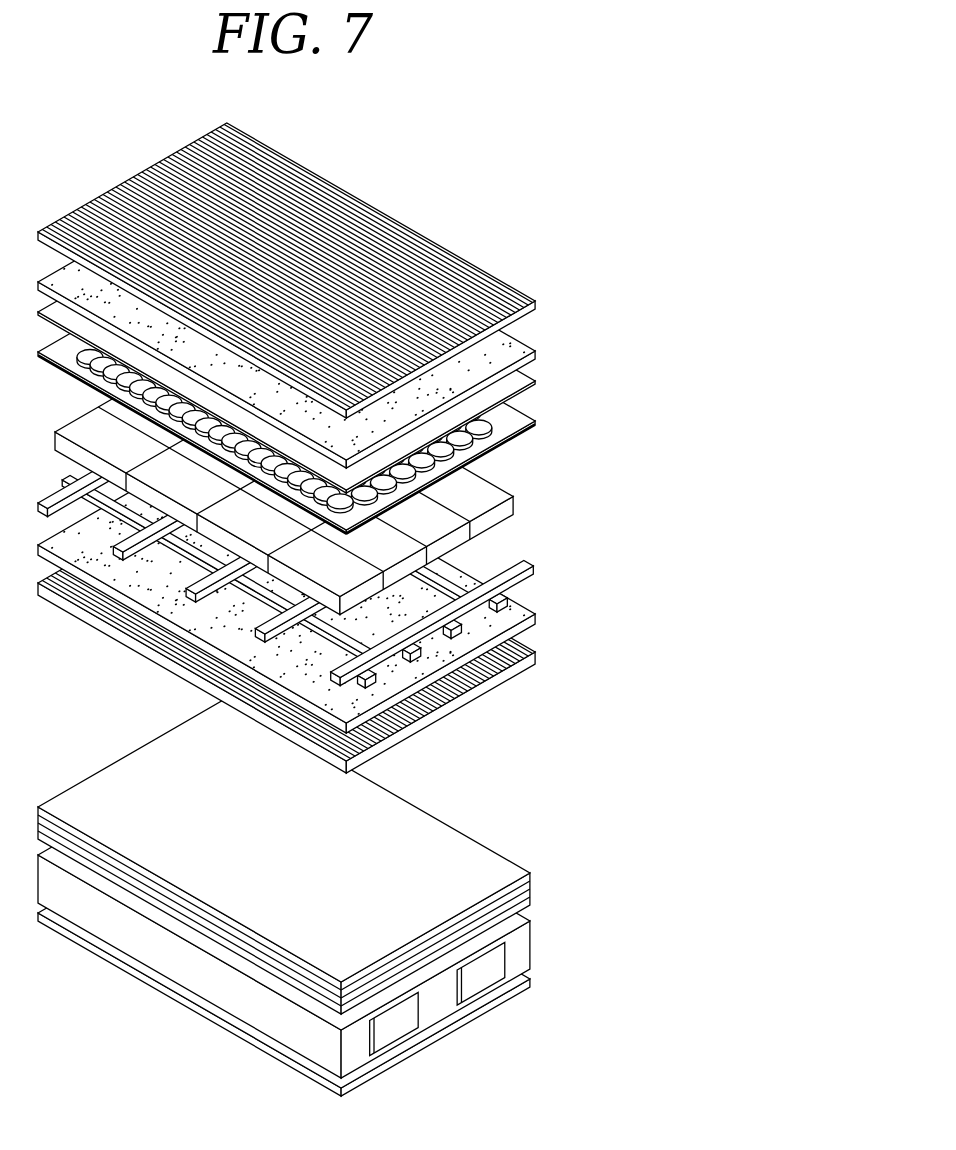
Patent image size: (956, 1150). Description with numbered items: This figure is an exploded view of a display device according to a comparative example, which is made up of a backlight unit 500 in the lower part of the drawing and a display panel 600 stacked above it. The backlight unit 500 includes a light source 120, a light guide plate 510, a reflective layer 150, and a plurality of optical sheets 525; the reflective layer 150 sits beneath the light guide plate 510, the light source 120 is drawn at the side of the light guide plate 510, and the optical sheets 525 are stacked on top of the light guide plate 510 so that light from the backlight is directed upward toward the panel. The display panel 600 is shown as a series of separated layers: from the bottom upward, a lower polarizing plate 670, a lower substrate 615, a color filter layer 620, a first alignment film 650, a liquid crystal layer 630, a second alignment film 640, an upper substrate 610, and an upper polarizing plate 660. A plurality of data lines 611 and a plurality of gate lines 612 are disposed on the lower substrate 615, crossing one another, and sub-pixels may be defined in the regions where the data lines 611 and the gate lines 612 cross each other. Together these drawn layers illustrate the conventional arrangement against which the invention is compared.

The display panel 600 is at (367, 448).
The upper polarizing plate 660 is at (327, 270).
The upper substrate 610 is at (530, 350).
The second alignment film 640 is at (532, 378).
The liquid crystal layer 630 is at (483, 423).
The first alignment film 650 is at (483, 441).
The color filter layer 620 is at (508, 512).
The data lines 611 is at (513, 562).
The gate lines 612 is at (505, 588).
The lower substrate 615 is at (515, 614).
The lower polarizing plate 670 is at (510, 650).
The optical sheets 525 is at (537, 883).
The backlight unit 500 is at (370, 897).
The light guide plate 510 is at (428, 1015).
The light source 120 is at (477, 985).
The reflective layer 150 is at (413, 1050).